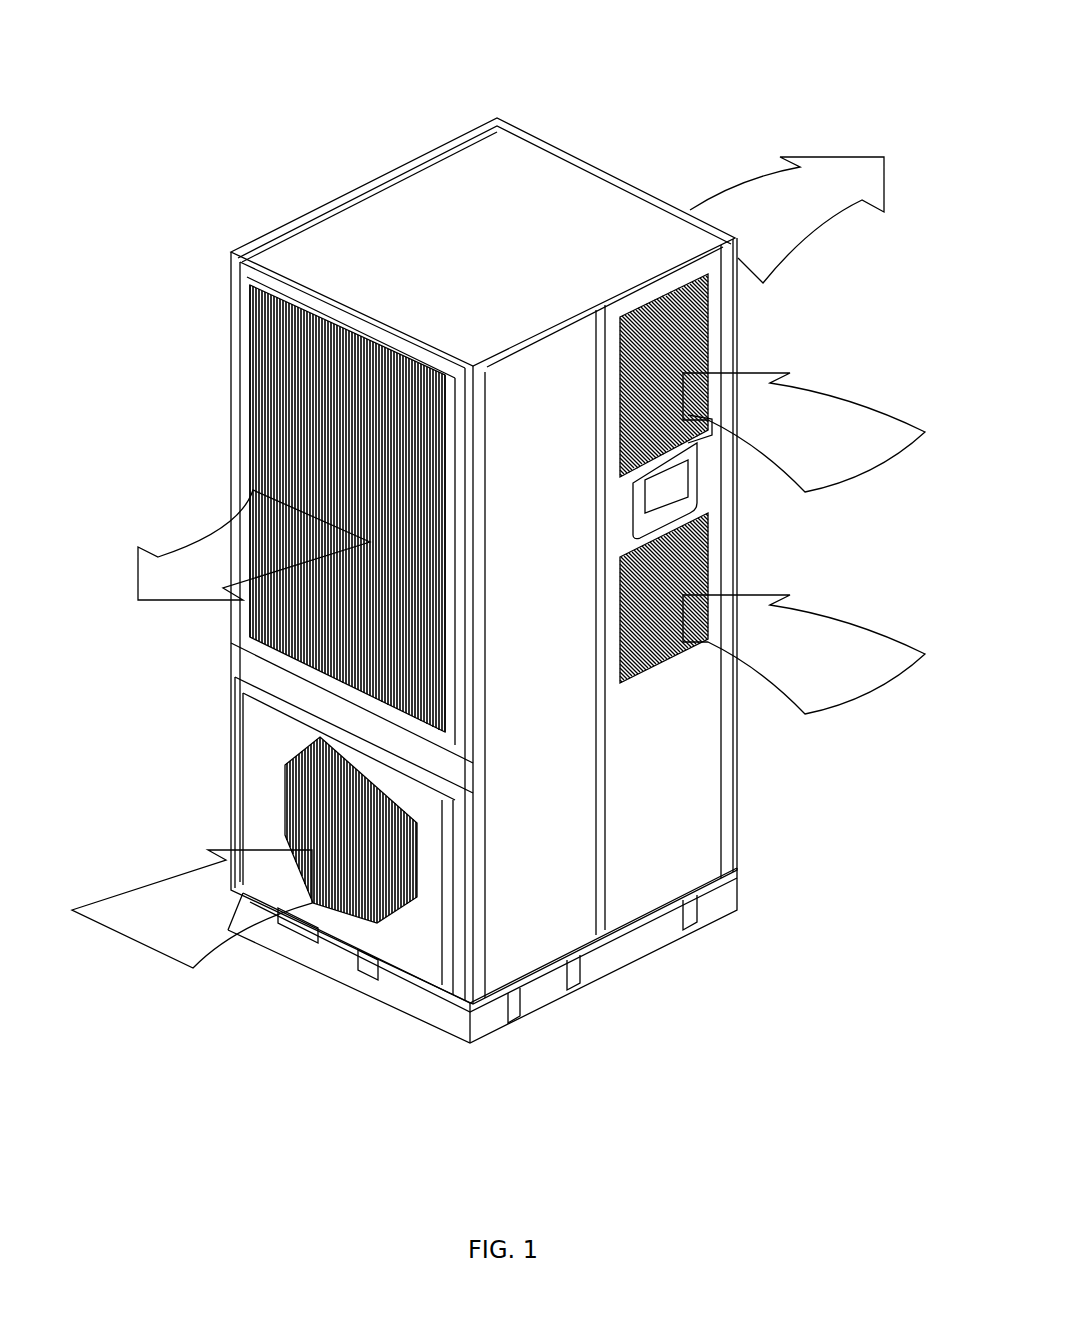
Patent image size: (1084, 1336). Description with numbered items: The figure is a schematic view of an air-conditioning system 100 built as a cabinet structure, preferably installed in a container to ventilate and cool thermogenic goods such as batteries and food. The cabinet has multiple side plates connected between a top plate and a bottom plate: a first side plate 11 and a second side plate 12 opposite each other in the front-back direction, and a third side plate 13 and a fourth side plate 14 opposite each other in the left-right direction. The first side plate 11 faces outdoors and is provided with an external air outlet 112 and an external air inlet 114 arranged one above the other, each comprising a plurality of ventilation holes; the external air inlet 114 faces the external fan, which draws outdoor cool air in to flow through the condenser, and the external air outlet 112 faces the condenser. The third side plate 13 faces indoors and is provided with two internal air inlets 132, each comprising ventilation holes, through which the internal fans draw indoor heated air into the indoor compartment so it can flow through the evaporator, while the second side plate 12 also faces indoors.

The air-conditioning system 100 is at (356, 158).
The fourth side plate 14 is at (305, 210).
The second side plate 12 is at (622, 180).
The external air outlet 112 is at (258, 383).
The external air inlet 114 is at (345, 905).
The first side plate 11 is at (409, 930).
The third side plate 13 is at (627, 875).
The internal air inlets 132 is at (698, 460).